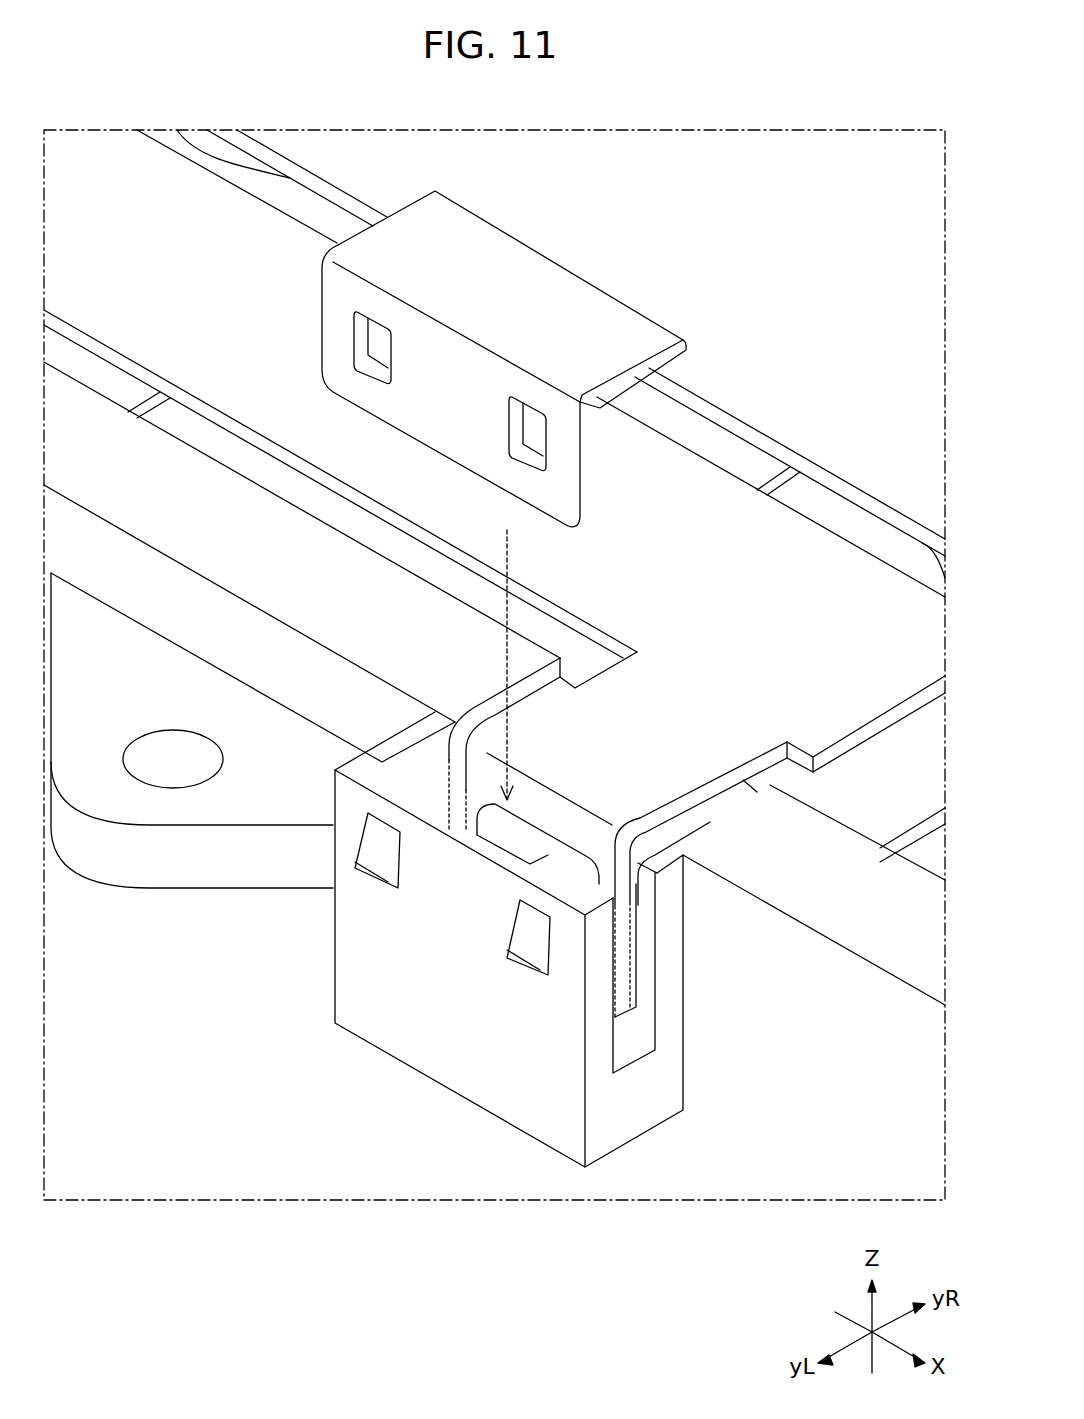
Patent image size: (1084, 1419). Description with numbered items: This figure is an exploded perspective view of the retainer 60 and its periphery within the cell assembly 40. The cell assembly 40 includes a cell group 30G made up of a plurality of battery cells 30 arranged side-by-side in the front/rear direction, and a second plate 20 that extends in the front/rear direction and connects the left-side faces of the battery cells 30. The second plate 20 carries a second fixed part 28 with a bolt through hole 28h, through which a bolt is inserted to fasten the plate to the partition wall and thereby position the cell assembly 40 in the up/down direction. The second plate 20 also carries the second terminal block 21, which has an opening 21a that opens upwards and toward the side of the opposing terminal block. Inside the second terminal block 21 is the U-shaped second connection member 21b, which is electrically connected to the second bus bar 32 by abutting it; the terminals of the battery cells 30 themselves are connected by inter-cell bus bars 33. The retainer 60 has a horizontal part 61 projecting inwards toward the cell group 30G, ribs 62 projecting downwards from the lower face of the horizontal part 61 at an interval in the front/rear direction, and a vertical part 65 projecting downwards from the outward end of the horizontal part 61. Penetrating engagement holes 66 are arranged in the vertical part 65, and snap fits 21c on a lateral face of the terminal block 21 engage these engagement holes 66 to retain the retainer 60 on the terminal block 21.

The second plate 20 is at (268, 1178).
The second terminal block 21 is at (494, 826).
The opening 21a is at (652, 965).
The second connection member 21b is at (538, 832).
The snap fits 21c is at (520, 940).
The second fixed part 28 is at (253, 763).
The bolt through hole 28h is at (160, 755).
The battery cell 30 is at (907, 856).
The cell group 30G is at (840, 792).
The second bus bar 32 is at (858, 698).
The inter-cell bus bar 33 is at (872, 285).
The cell assembly 40 is at (853, 156).
The retainer 60 is at (503, 340).
The horizontal part 61 is at (575, 292).
The ribs 62 is at (665, 385).
The vertical part 65 is at (418, 432).
The engagement holes 66 is at (360, 345).